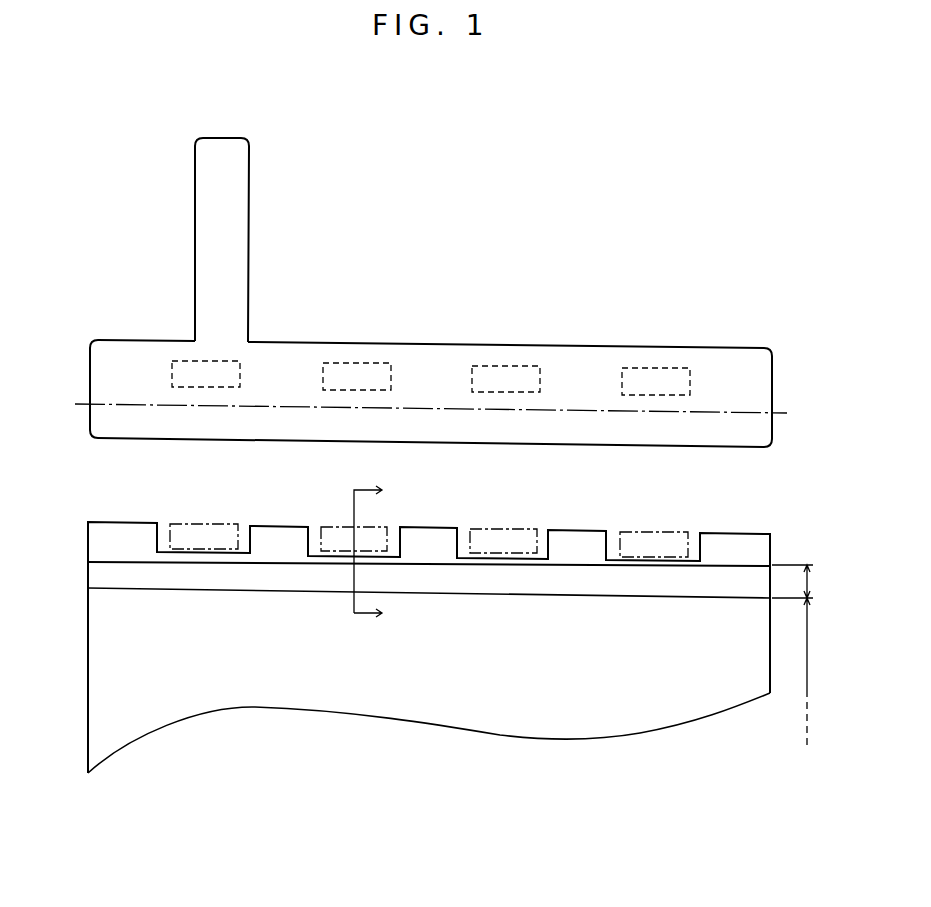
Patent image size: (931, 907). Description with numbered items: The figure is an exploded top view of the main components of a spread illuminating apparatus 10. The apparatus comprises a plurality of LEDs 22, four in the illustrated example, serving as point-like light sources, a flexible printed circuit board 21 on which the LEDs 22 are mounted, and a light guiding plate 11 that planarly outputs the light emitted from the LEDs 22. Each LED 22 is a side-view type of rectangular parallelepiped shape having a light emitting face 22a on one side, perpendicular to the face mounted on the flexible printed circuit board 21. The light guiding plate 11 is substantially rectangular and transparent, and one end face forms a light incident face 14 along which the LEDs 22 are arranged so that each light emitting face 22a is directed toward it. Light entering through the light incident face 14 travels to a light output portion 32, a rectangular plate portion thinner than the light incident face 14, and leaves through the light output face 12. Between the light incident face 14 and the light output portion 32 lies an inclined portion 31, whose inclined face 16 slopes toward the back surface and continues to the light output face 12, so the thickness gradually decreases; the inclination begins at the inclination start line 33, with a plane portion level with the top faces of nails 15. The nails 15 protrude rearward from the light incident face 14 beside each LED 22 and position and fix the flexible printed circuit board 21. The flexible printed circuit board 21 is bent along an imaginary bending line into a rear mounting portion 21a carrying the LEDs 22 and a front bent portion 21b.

The spread illuminating apparatus 10 is at (80, 163).
The light guiding plate 11 is at (401, 624).
The light output face 12 is at (658, 713).
The light incident face 14 is at (240, 550).
The nails 15 is at (116, 532).
The inclined face 16 is at (115, 588).
The flexible printed circuit board 21 is at (484, 295).
The mounting portion 21a is at (760, 378).
The bent portion 21b is at (464, 426).
The LEDs 22 is at (186, 372).
The light emitting face 22a is at (224, 391).
The inclined portion 31 is at (792, 581).
The light output portion 32 is at (794, 671).
The inclination start line 33 is at (105, 563).